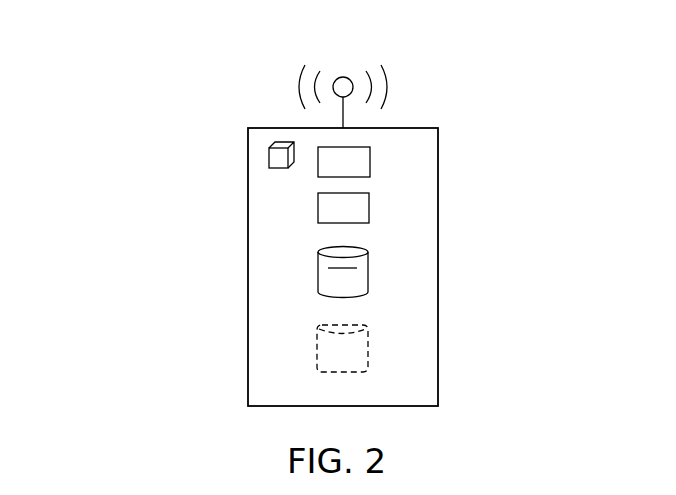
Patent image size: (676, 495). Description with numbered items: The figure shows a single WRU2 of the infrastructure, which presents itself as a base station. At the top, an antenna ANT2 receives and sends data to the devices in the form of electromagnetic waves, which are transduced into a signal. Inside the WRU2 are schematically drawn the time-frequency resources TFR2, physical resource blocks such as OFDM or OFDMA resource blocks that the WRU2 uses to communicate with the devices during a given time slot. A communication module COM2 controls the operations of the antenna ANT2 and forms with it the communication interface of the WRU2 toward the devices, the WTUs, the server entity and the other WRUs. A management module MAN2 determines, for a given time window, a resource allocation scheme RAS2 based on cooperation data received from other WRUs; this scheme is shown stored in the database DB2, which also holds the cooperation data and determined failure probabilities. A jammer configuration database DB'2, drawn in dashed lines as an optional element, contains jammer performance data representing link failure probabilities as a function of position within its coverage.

The WRU WRU2 is at (182, 181).
The antenna ANT2 is at (290, 80).
The time-frequency resources TFR2 is at (270, 153).
The communication module COM2 is at (370, 158).
The management module MAN2 is at (369, 208).
The database DB2 is at (369, 272).
The resource allocation scheme RAS2 is at (345, 268).
The jammer configuration database DB'2 is at (413, 339).